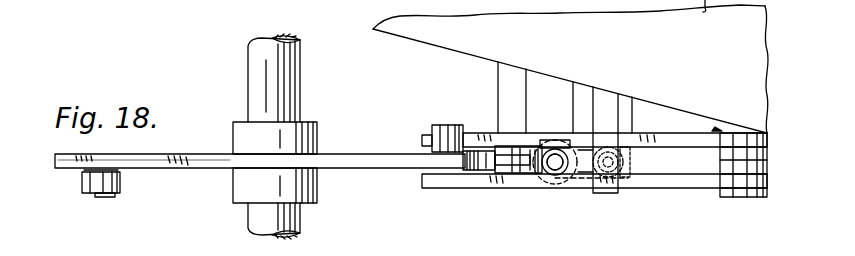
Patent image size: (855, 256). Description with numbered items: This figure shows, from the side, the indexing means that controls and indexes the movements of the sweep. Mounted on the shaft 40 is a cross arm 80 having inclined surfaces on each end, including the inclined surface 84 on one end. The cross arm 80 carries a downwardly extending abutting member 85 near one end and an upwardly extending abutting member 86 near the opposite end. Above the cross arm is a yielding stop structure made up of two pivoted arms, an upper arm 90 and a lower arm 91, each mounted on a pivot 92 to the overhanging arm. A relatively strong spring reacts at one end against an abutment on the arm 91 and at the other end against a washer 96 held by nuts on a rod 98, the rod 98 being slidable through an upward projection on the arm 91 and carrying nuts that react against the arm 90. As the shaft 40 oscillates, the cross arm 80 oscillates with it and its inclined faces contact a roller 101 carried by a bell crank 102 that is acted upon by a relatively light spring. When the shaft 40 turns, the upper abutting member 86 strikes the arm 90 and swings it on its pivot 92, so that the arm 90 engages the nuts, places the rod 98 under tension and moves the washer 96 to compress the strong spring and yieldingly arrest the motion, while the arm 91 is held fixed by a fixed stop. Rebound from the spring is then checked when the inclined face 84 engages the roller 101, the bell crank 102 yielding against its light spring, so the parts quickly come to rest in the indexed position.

The shaft 40 is at (302, 63).
The cross arm 80 is at (346, 169).
The inclined surface 84 is at (476, 171).
The downwardly extending abutting member 85 is at (120, 184).
The upwardly extending abutting member 86 is at (433, 127).
The pivoted arm 90 is at (673, 133).
The pivoted arm 91 is at (655, 189).
The pivot 92 is at (722, 193).
The washer 96 is at (539, 183).
The rod 98 is at (549, 139).
The roller 101 is at (521, 174).
The bell crank 102 is at (580, 183).